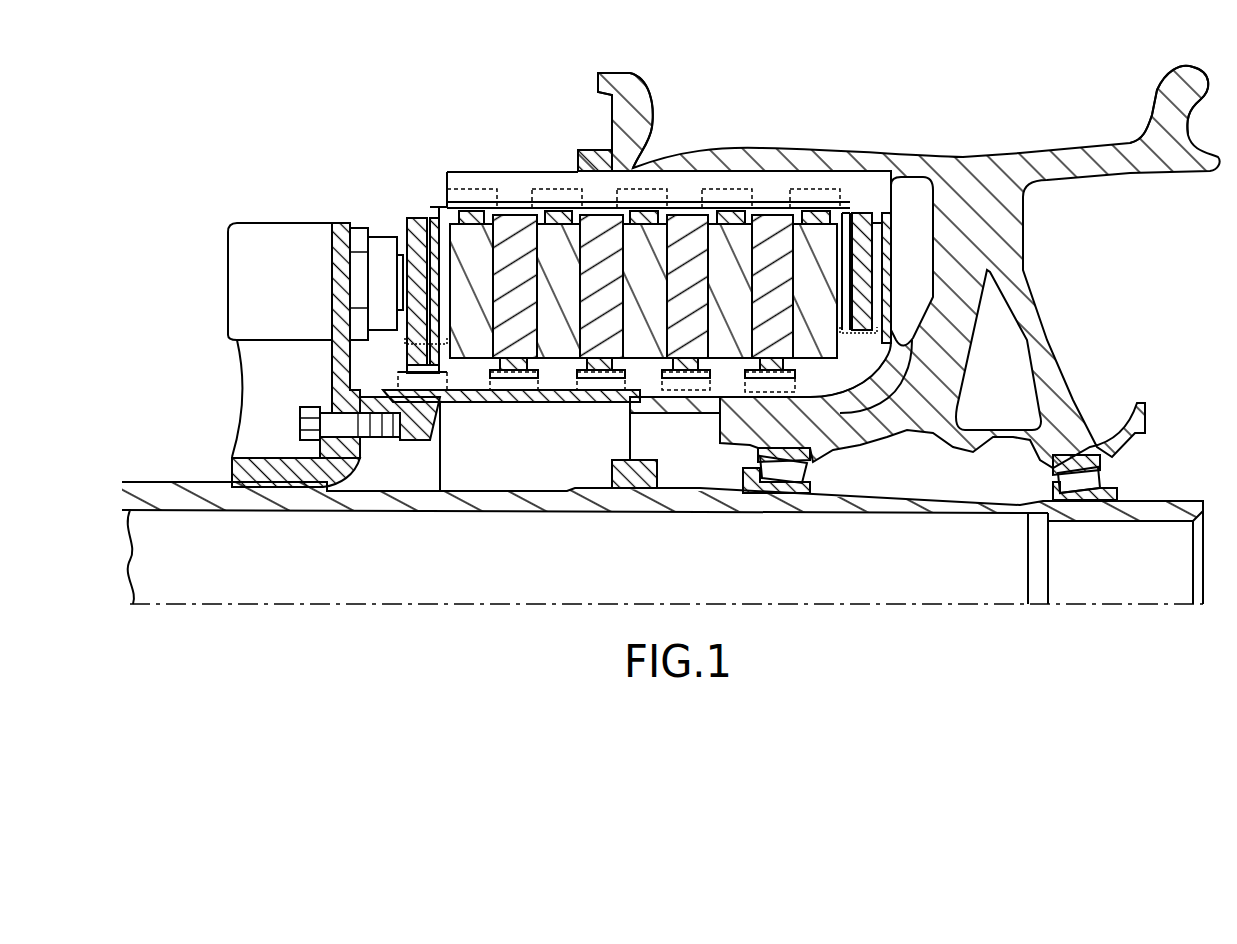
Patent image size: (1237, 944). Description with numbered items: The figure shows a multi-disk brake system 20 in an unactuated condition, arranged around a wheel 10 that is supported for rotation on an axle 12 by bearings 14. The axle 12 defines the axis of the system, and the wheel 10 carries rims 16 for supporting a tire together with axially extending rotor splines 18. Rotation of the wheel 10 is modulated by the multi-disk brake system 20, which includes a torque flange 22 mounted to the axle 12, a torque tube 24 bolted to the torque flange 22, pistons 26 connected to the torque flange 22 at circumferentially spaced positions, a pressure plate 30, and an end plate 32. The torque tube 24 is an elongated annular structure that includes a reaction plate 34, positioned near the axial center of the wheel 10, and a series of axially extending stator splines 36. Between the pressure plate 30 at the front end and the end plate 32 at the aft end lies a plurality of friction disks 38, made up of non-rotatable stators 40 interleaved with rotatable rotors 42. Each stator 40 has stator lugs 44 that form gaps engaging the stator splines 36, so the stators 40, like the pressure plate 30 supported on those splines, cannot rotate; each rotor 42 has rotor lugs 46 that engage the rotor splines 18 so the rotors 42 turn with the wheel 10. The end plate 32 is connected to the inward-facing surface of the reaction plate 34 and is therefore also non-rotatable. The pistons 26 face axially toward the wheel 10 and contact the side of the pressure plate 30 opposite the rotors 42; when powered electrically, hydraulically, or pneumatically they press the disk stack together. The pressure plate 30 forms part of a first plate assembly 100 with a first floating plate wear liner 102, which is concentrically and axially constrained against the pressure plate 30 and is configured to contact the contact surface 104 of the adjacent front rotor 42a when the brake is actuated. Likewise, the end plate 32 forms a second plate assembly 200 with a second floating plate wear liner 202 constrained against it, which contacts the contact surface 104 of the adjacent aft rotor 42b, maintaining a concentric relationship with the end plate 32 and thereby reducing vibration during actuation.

The wheel 10 is at (1000, 223).
The axle 12 is at (217, 493).
The bearings 14 is at (808, 468).
The rims 16 is at (632, 73).
The rotor splines 18 is at (600, 180).
The multi-disk brake system 20 is at (323, 176).
The torque flange 22 is at (350, 372).
The torque tube 24 is at (490, 400).
The pistons 26 is at (387, 250).
The pressure plate 30 is at (410, 218).
The end plate 32 is at (887, 213).
The reaction plate 34 is at (888, 308).
The stator splines 36 is at (555, 380).
The friction disks 38 is at (439, 201).
The non-rotatable friction disk (stator) 40 is at (517, 367).
The rotatable friction disk (rotor) 42 is at (553, 210).
The front rotor 42a is at (470, 210).
The aft rotor 42b is at (820, 205).
The stator lugs 44 is at (727, 382).
The rotor lugs 46 is at (716, 192).
The first plate assembly 100 is at (422, 342).
The first floating plate wear liner 102 is at (420, 217).
The contact surface 104 is at (450, 312).
The second plate assembly 200 is at (857, 318).
The second floating plate wear liner 202 is at (843, 210).